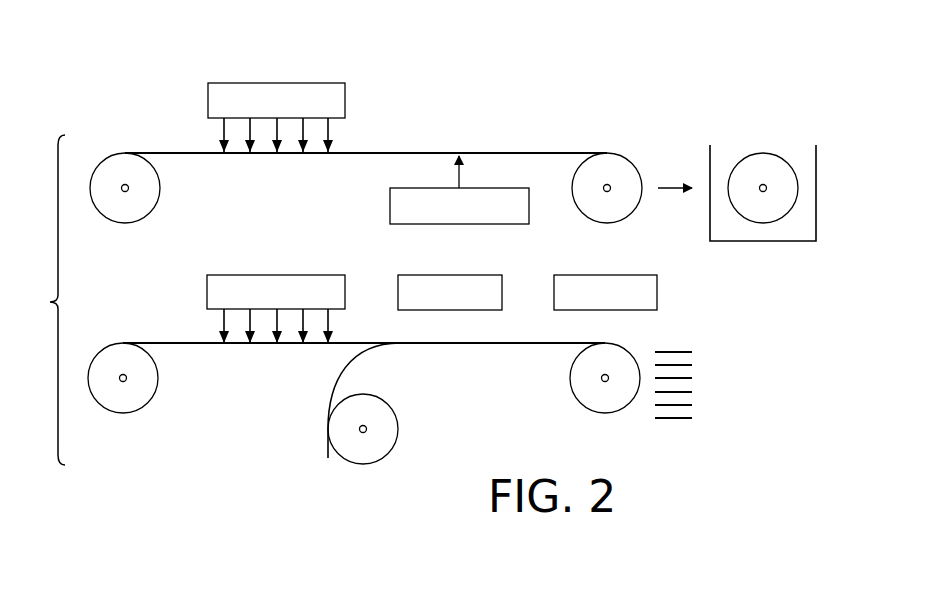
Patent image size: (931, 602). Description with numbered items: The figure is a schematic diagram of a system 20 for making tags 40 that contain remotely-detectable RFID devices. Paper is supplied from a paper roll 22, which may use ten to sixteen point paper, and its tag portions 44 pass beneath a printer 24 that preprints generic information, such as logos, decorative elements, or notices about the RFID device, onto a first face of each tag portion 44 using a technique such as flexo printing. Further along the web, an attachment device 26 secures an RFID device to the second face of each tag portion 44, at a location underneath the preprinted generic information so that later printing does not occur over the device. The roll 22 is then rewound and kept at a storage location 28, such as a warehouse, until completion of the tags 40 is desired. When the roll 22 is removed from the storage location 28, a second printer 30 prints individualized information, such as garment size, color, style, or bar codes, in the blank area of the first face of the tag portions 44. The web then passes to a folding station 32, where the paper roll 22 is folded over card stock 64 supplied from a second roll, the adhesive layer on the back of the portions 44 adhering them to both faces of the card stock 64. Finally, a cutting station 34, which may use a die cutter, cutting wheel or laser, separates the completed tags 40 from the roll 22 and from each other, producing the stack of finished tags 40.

The system 20 is at (130, 100).
The paper roll 22 is at (140, 222).
The printer 24 is at (346, 100).
The attachment device 26 is at (390, 203).
The storage location 28 is at (710, 158).
The second printer 30 is at (345, 273).
The folding station 32 is at (482, 275).
The cutting station 34 is at (657, 292).
The tag 40 is at (718, 350).
The tag portion 44 is at (268, 163).
The card stock 64 is at (332, 452).